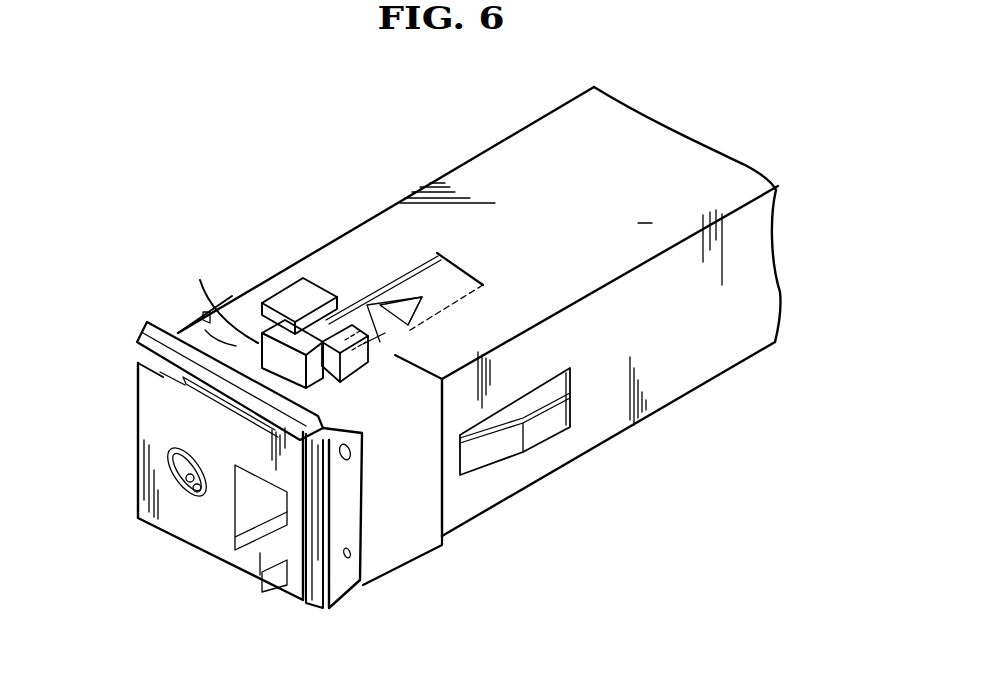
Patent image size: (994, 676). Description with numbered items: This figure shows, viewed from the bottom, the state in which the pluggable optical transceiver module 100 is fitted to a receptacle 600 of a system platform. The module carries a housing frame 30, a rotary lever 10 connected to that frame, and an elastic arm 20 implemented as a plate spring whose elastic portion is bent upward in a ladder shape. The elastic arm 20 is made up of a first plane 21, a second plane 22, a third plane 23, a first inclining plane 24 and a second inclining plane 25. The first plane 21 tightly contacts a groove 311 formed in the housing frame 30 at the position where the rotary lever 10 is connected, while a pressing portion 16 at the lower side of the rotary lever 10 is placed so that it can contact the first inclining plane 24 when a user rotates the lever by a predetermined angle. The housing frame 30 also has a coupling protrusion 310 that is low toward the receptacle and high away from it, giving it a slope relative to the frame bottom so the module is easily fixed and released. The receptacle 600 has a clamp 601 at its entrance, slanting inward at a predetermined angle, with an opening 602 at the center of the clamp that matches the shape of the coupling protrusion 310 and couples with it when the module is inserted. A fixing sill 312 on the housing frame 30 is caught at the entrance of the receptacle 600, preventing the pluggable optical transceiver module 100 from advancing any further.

The pluggable optical transceiver module 100 is at (157, 247).
The rotary lever 10 is at (363, 584).
The pressing portion 16 is at (141, 330).
The elastic arm 20 is at (247, 327).
The first plane 21 is at (160, 376).
The second plane 22 is at (396, 350).
The third plane 23 is at (273, 330).
The first inclining plane 24 is at (204, 317).
The second inclining plane 25 is at (372, 348).
The housing frame 30 is at (446, 567).
The coupling protrusion 310 is at (392, 298).
The groove 311 is at (178, 415).
The fixing sill 312 is at (290, 293).
The receptacle 600 is at (453, 148).
The clamp 601 is at (353, 300).
The opening 602 is at (397, 312).